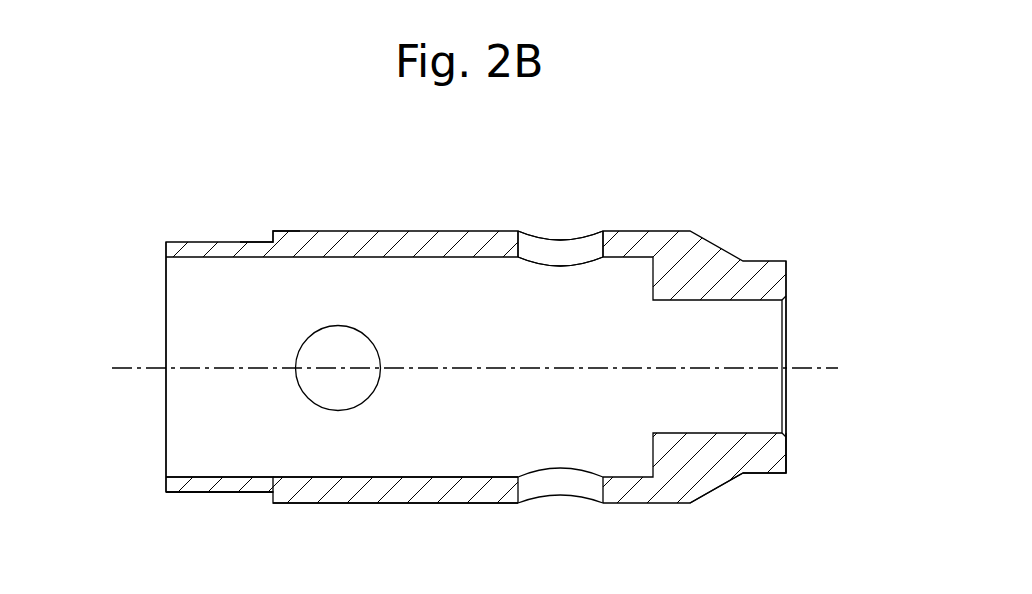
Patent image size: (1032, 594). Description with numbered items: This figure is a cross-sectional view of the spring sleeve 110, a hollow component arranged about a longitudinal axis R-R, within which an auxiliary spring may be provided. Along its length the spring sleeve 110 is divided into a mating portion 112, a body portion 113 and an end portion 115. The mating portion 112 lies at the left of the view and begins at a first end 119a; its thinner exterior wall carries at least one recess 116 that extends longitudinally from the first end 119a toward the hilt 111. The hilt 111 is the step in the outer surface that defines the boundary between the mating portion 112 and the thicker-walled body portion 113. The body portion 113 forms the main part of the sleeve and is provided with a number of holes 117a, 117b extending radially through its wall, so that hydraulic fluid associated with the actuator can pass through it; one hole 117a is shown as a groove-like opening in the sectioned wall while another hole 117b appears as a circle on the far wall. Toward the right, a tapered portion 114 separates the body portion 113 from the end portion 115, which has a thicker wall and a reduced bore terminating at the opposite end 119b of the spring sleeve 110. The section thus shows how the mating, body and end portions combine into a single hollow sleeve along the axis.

The spring sleeve 110 is at (237, 185).
The hilt 111 is at (272, 234).
The mating portion 112 is at (233, 493).
The body portion 113 is at (413, 504).
The tapered portion 114 is at (717, 489).
The end portion 115 is at (777, 474).
The recess 116 is at (185, 494).
The hole 117a is at (562, 241).
The hole 117b is at (338, 333).
The first end 119a is at (166, 285).
The second end opening 119b is at (787, 286).